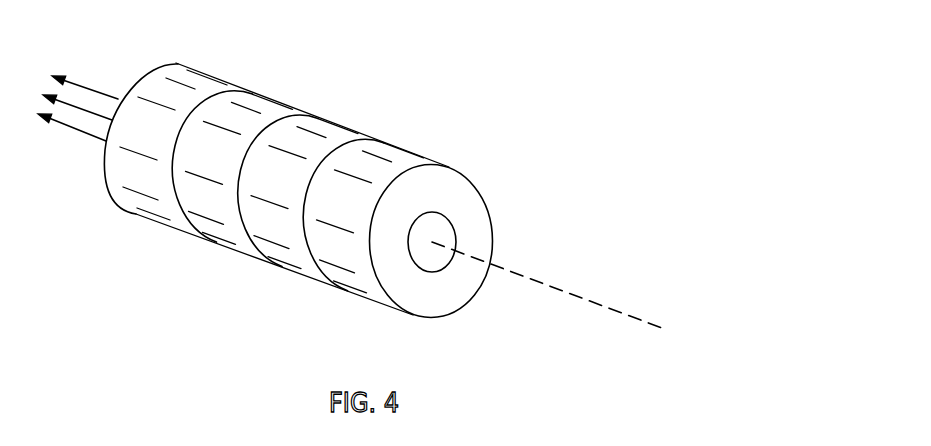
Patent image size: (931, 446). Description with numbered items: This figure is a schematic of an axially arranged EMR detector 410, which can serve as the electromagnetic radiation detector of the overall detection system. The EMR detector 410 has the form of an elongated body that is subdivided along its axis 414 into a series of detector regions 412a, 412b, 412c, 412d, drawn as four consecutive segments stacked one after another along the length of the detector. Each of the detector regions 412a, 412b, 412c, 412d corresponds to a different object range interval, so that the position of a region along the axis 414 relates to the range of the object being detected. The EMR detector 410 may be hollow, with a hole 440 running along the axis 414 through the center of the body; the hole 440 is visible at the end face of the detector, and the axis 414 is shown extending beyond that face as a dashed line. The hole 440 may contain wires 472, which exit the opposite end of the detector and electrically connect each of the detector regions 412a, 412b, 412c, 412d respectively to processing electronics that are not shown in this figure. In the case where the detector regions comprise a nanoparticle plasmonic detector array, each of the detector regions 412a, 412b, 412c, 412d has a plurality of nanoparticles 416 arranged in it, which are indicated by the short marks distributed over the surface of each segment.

The EMR detector 410 is at (350, 200).
The detector region 412a is at (155, 221).
The detector region 412b is at (222, 246).
The detector region 412c is at (290, 273).
The detector region 412d is at (360, 298).
The axis 414 is at (594, 301).
The nanoparticles 416 is at (203, 91).
The hole 440 is at (447, 226).
The wires 472 is at (91, 89).